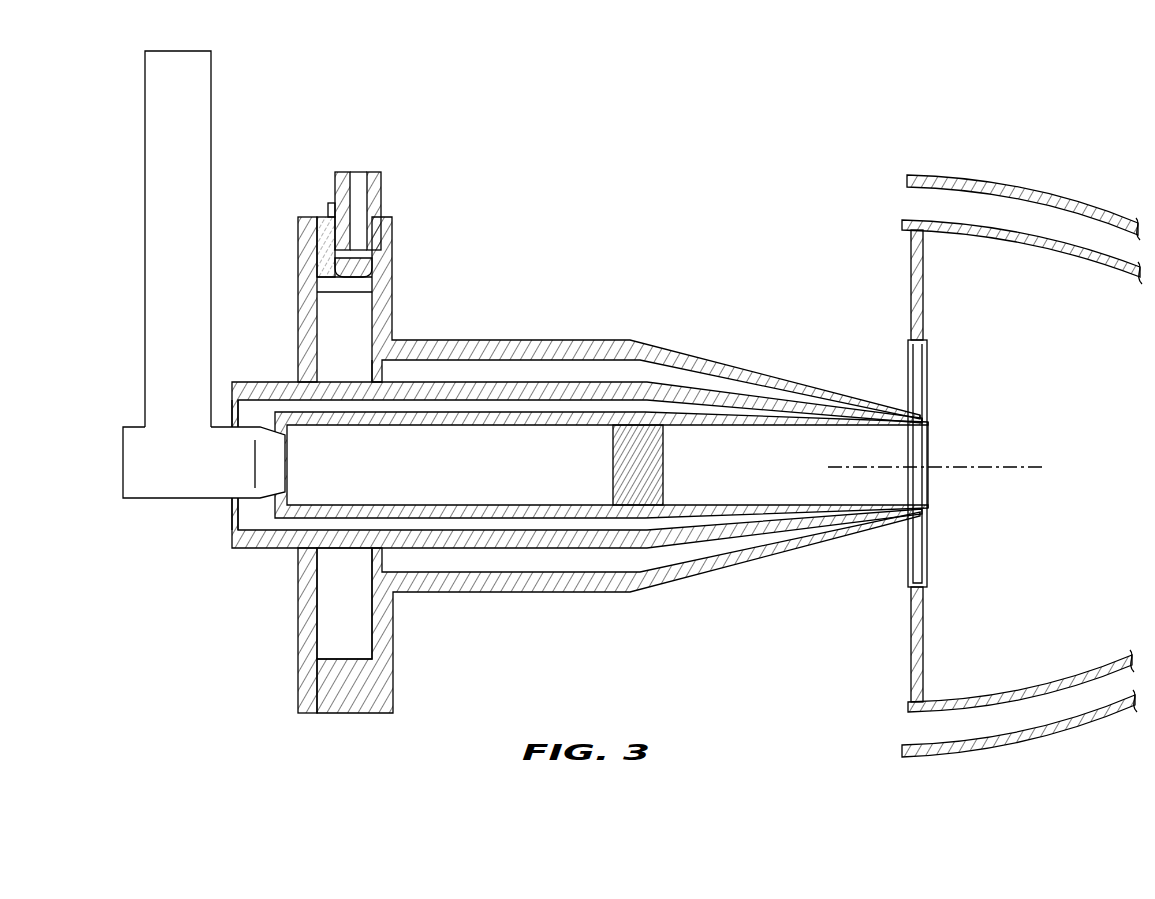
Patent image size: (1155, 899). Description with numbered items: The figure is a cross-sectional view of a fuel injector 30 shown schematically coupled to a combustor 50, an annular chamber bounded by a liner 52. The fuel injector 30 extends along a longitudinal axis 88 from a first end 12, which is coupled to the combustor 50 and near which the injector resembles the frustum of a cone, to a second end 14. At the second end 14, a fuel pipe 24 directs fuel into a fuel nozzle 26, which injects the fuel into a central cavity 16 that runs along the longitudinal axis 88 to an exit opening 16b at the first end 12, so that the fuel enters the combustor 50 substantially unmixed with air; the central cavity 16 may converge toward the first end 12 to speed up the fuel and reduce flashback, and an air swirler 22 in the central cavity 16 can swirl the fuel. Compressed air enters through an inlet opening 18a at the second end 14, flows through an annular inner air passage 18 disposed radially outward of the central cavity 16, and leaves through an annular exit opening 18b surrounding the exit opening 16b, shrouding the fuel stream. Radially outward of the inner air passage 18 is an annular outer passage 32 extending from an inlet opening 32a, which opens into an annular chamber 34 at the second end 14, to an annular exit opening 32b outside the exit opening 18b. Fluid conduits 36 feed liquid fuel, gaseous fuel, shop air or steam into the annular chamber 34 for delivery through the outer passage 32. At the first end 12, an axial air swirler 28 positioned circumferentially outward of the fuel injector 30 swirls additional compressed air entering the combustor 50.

The first end 12 is at (965, 568).
The second end 14 is at (249, 674).
The central cavity 16 is at (452, 478).
The exit opening 16b is at (931, 447).
The inner air passage 18 is at (597, 405).
The inlet opening 18a is at (258, 524).
The exit opening 18b is at (932, 420).
The air swirler 22 is at (645, 507).
The fuel pipe 24 is at (163, 238).
The fuel nozzle 26 is at (173, 474).
The air swirler 28 is at (923, 343).
The fuel injector 30 is at (785, 318).
The outer passage 32 is at (513, 367).
The inlet opening 32a is at (372, 367).
The exit opening 32b is at (930, 420).
The annular chamber 34 is at (331, 630).
The fluid conduits 36 is at (381, 173).
The combustor 50 is at (1070, 475).
The liner 52 is at (1047, 180).
The longitudinal axis 88 is at (992, 467).